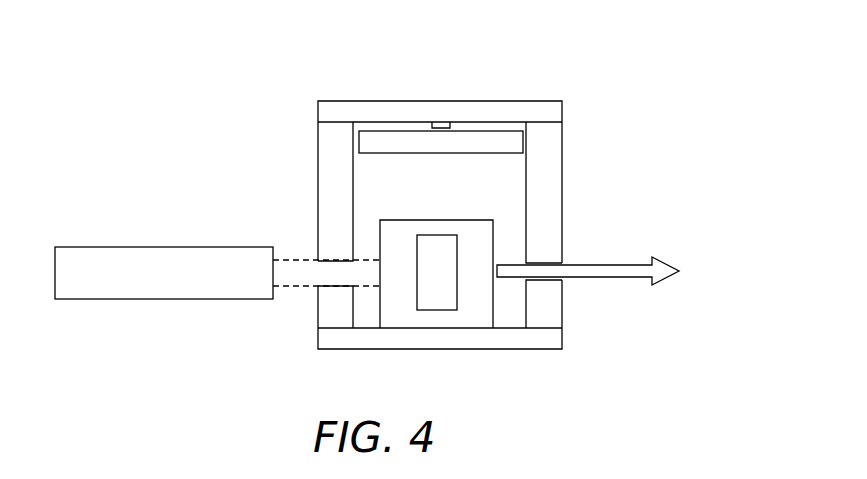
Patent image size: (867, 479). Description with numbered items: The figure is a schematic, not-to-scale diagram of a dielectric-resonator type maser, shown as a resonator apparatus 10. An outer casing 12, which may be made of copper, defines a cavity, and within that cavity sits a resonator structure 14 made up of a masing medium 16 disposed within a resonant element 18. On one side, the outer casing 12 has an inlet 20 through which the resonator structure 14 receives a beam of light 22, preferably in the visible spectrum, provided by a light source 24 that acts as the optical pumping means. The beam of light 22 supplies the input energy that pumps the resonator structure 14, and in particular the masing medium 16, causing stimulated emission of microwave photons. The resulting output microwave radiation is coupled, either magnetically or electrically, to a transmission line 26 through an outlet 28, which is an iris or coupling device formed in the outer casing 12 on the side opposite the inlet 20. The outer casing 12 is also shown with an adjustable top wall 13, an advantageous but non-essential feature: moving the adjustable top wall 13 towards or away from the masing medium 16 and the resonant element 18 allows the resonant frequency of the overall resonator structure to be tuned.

The resonator apparatus 10 is at (616, 72).
The outer casing 12 is at (558, 183).
The adjustable top wall 13 is at (370, 142).
The resonator structure 14 is at (447, 215).
The masing medium 16 is at (437, 302).
The resonant element 18 is at (480, 313).
The inlet 20 is at (317, 255).
The beam of light 22 is at (312, 278).
The light source 24 is at (157, 288).
The transmission line 26 is at (625, 263).
The outlet 28 is at (563, 263).